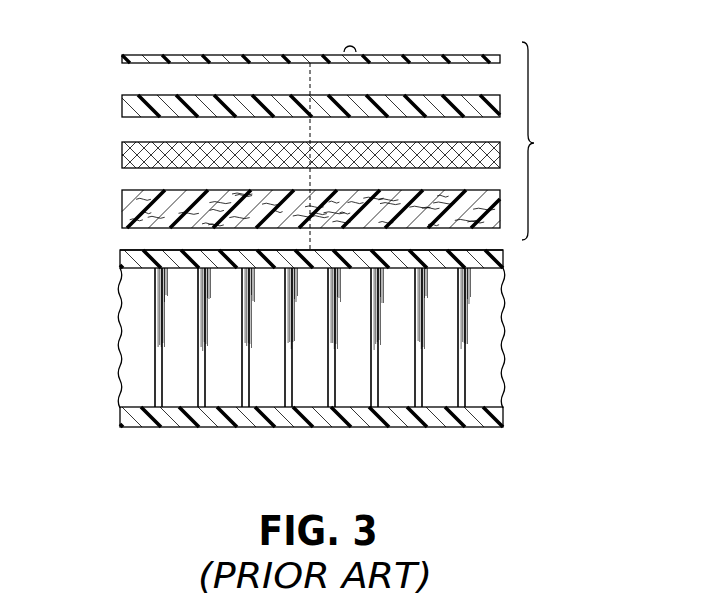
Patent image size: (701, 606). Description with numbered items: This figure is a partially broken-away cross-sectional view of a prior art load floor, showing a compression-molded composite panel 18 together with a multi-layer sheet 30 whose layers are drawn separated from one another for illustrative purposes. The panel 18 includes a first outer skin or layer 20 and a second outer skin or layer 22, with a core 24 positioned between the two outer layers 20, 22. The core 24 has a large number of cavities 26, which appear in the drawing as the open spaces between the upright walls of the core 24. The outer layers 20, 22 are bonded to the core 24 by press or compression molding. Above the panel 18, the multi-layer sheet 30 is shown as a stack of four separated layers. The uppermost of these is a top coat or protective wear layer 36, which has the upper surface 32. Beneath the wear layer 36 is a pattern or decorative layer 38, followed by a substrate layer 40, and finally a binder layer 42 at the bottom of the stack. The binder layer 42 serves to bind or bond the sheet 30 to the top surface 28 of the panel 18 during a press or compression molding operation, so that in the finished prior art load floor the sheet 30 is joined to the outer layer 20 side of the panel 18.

The compression-molded composite panel 18 is at (332, 347).
The first outer skin 20 is at (507, 251).
The second outer skin 22 is at (507, 416).
The core 24 is at (503, 340).
The cavities 26 is at (180, 397).
The top surface 28 is at (172, 250).
The multi-layer sheet 30 is at (545, 141).
The upper surface 32 is at (354, 50).
The protective wear layer 36 is at (122, 58).
The decorative layer 38 is at (122, 107).
The substrate layer 40 is at (122, 157).
The binder layer 42 is at (122, 212).